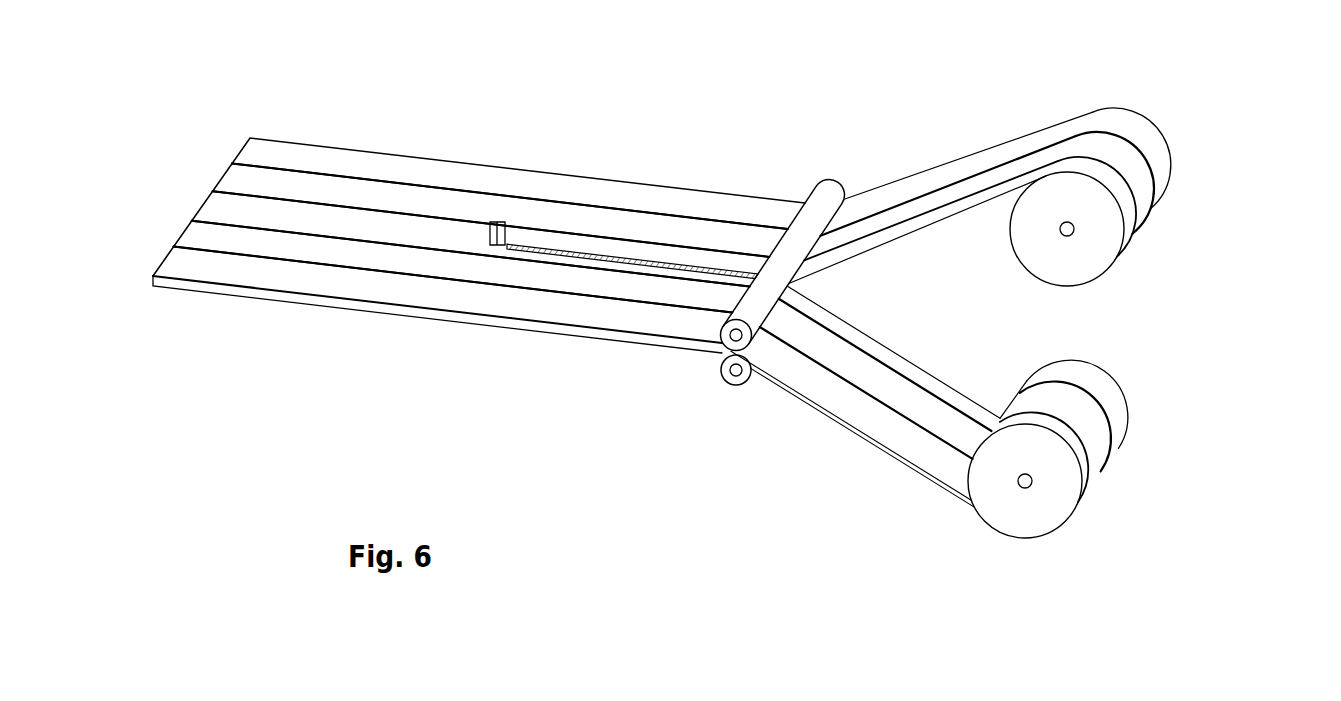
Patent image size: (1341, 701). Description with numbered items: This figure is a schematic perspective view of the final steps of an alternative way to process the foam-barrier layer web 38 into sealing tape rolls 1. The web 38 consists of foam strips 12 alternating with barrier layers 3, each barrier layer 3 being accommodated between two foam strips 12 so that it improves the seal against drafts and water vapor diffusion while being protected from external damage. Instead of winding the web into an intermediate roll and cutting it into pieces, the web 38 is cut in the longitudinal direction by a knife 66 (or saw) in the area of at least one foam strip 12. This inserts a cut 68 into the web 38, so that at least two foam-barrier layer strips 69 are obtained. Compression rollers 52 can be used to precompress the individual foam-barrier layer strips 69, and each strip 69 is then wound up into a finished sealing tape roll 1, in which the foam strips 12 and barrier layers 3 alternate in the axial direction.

The sealing tape roll 1 is at (1100, 237).
The barrier layer 3 is at (358, 268).
The foam strip 12 is at (228, 265).
The foam-barrier layer web 38 is at (418, 290).
The compression rollers 52 is at (747, 378).
The knife 66 is at (498, 222).
The cut 68 is at (637, 262).
The foam-barrier layer strip 69 is at (927, 183).